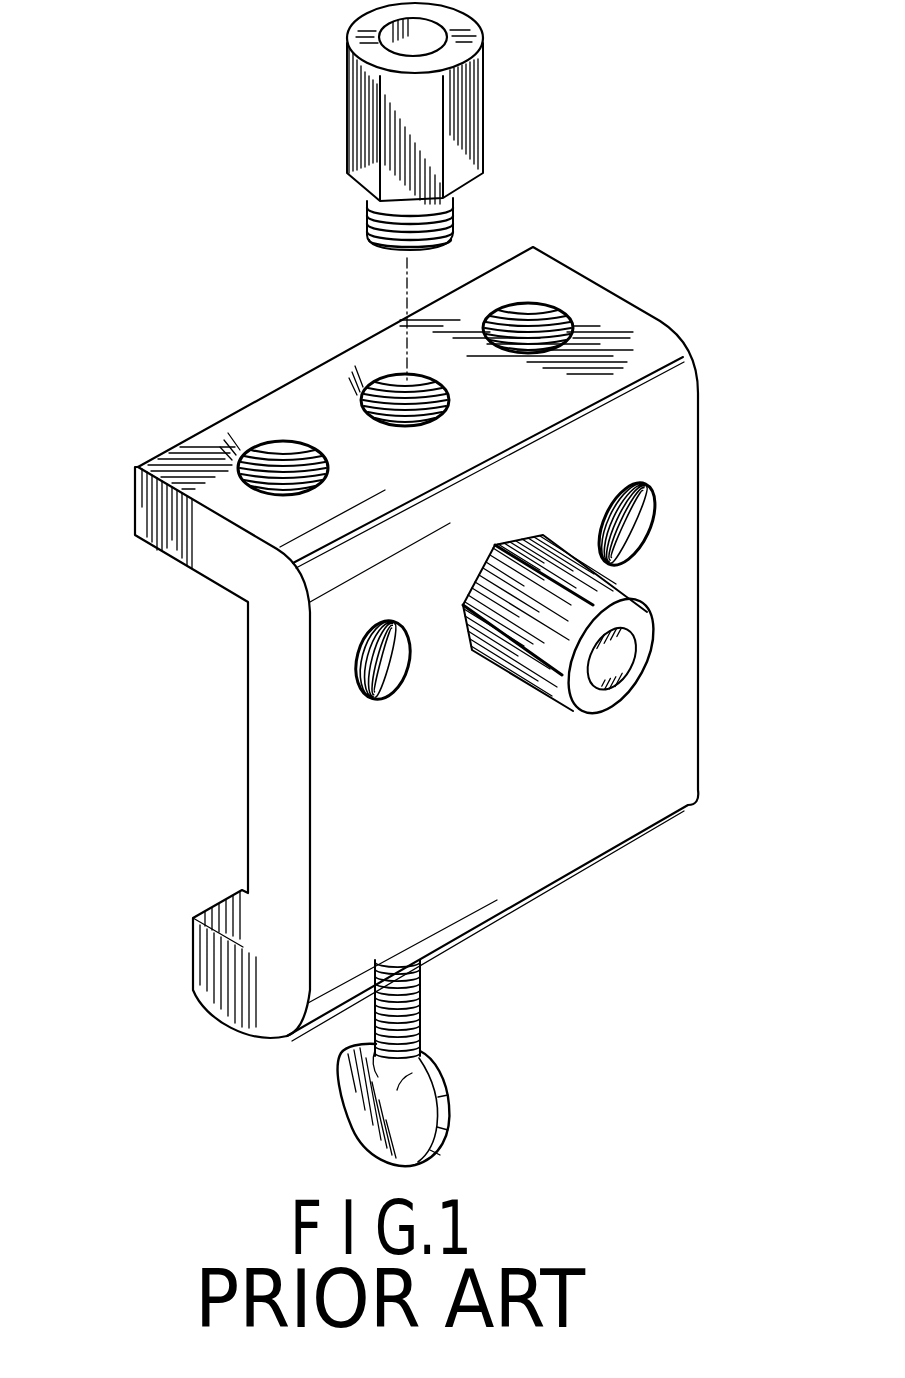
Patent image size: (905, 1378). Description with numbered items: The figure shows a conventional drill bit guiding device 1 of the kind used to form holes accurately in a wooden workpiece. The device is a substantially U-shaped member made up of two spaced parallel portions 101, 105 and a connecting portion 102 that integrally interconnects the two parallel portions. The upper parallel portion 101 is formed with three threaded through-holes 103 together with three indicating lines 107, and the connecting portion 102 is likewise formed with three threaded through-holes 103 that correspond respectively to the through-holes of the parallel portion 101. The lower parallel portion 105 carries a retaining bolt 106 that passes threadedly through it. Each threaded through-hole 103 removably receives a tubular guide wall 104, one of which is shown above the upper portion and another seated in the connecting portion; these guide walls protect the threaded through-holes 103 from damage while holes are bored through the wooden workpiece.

The drill bit guiding device 1 is at (702, 393).
The parallel portion 101 is at (177, 468).
The connecting portion 102 is at (683, 598).
The threaded through-hole 103 is at (557, 303).
The tubular guide wall 104 is at (472, 90).
The parallel portion 105 is at (213, 1000).
The retaining bolt 106 is at (420, 1018).
The indicating line 107 is at (355, 366).